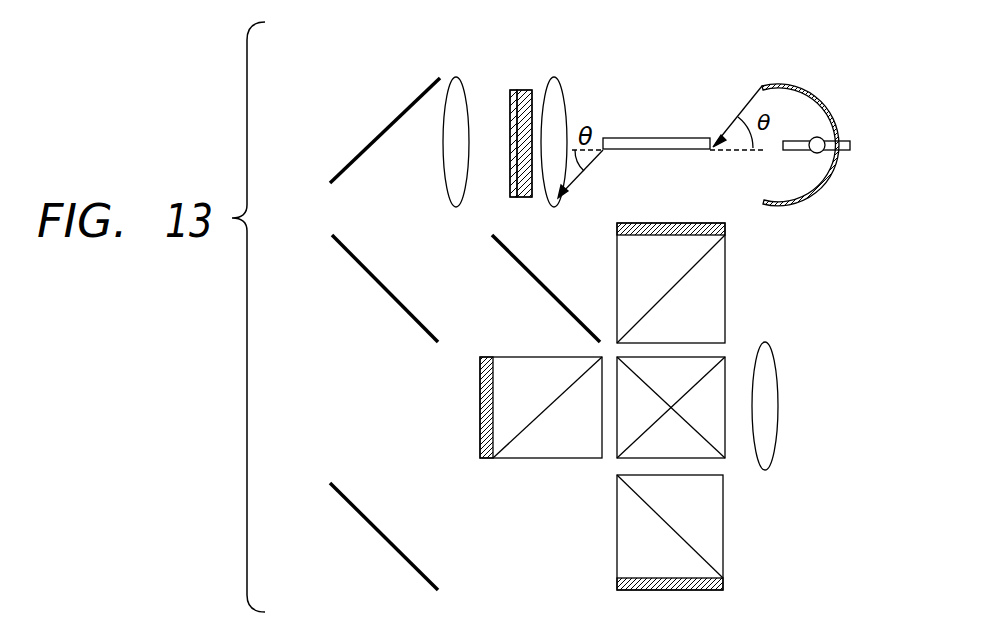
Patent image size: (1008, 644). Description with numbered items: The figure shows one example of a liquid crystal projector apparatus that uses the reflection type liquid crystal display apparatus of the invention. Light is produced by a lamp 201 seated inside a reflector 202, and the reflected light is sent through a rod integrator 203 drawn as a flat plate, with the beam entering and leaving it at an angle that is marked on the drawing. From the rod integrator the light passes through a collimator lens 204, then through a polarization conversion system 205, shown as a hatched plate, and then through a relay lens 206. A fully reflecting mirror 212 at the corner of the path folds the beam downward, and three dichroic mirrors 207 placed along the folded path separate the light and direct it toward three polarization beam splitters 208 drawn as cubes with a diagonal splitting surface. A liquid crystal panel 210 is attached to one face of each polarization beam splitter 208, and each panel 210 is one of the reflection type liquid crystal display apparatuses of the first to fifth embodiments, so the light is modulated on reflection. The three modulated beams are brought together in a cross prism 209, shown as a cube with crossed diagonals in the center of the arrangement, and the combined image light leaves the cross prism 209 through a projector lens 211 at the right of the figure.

The lamp 201 is at (818, 154).
The reflector 202 is at (808, 92).
The rod integrator 203 is at (672, 137).
The collimator lens 204 is at (563, 95).
The polarization conversion system 205 is at (525, 90).
The relay lens 206 is at (457, 77).
The dichroic mirror 207 is at (377, 285).
The polarization beam splitter 208 is at (718, 267).
The cross prism 209 is at (725, 362).
The liquid crystal panel 210 is at (678, 222).
The projector lens 211 is at (772, 404).
The fully reflecting mirror 212 is at (398, 115).